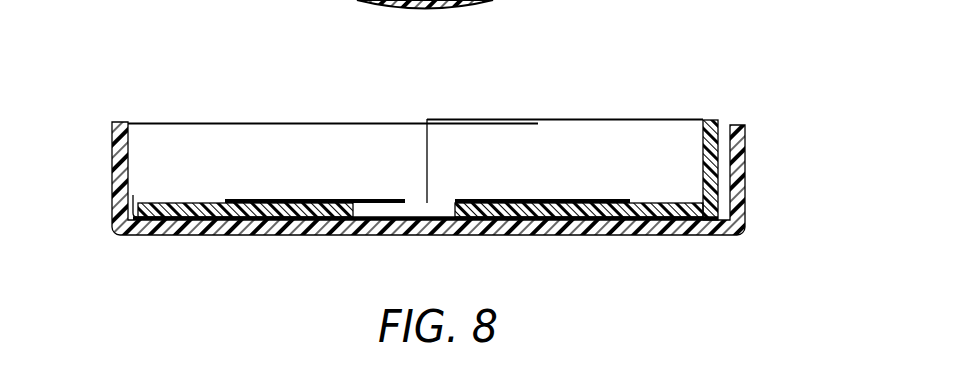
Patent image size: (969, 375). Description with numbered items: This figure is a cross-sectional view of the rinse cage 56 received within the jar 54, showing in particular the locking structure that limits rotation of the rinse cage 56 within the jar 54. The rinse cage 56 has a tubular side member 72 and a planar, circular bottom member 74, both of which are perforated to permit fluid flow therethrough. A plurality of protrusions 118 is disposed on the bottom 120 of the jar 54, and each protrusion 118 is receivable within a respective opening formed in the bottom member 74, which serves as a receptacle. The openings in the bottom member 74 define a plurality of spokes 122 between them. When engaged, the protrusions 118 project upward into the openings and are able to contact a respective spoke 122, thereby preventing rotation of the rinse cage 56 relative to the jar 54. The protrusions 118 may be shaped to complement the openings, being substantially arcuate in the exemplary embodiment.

The jar 54 is at (760, 178).
The rinse cage 56 is at (664, 102).
The tubular side member 72 is at (538, 123).
The bottom member 74 is at (168, 203).
The protrusion 118 is at (275, 199).
The bottom 120 is at (133, 200).
The spoke 122 is at (337, 0).